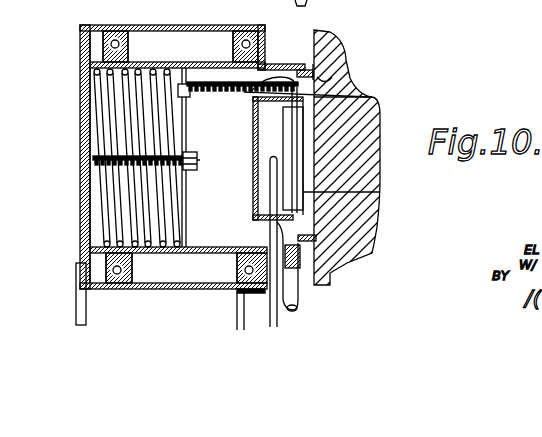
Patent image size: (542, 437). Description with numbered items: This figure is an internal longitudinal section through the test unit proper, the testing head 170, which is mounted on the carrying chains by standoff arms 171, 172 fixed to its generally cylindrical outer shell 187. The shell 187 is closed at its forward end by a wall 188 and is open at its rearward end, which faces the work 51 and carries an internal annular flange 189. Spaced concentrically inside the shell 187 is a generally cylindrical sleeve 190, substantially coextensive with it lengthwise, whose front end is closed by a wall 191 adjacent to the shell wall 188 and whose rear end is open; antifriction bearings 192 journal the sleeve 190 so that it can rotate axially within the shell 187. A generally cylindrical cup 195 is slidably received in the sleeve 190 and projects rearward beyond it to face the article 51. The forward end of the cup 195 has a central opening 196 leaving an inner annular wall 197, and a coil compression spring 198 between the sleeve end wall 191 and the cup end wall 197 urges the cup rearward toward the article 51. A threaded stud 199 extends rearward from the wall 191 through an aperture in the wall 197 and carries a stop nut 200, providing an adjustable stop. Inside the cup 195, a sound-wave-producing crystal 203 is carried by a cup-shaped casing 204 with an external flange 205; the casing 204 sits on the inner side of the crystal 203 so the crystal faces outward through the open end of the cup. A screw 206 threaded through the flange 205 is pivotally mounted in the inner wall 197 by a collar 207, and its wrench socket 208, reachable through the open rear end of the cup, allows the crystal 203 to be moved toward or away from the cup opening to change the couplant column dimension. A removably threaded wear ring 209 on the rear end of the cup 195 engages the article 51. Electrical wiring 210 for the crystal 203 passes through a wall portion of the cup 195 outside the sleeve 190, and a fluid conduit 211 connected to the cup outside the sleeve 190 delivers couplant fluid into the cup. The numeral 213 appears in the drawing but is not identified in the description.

The work 51 is at (372, 153).
The testing head 170 is at (78, 38).
The standoff arm 171 is at (78, 312).
The standoff arm 172 is at (240, 318).
The outer shell 187 is at (118, 25).
The wall 188 is at (88, 72).
The internal annular flange 189 is at (264, 44).
The sleeve 190 is at (98, 242).
The wall 191 is at (88, 155).
The antifriction bearings 192 is at (118, 290).
The cup 195 is at (266, 66).
The central opening 196 is at (186, 128).
The inner annular wall 197 is at (175, 253).
The coil compression spring 198 is at (97, 107).
The threaded stud 199 is at (100, 168).
The stop nut 200 is at (190, 170).
The sound-wave-producing crystal 203 is at (380, 192).
The cup-shaped casing 204 is at (268, 217).
The flange 205 is at (256, 91).
The screw 206 is at (224, 82).
The collar 207 is at (190, 68).
The wrench socket 208 is at (370, 97).
The wear ring 209 is at (336, 74).
The electrical wiring 210 is at (268, 236).
The fluid conduit 211 is at (292, 305).
The element 213 is at (372, 5).